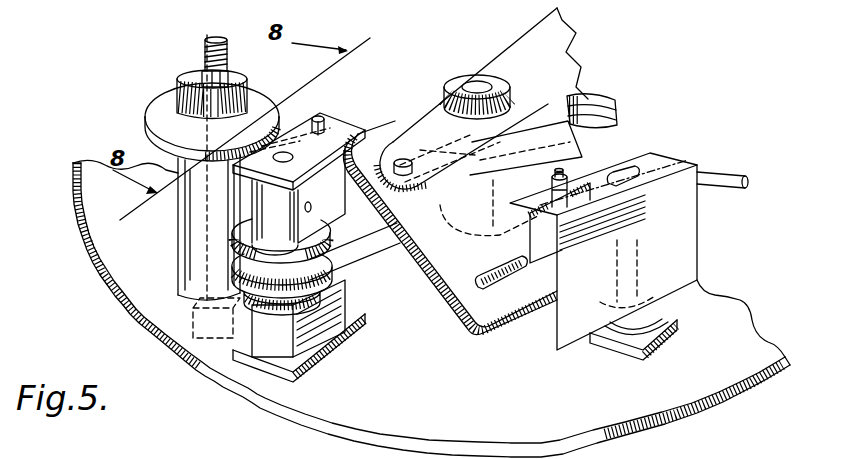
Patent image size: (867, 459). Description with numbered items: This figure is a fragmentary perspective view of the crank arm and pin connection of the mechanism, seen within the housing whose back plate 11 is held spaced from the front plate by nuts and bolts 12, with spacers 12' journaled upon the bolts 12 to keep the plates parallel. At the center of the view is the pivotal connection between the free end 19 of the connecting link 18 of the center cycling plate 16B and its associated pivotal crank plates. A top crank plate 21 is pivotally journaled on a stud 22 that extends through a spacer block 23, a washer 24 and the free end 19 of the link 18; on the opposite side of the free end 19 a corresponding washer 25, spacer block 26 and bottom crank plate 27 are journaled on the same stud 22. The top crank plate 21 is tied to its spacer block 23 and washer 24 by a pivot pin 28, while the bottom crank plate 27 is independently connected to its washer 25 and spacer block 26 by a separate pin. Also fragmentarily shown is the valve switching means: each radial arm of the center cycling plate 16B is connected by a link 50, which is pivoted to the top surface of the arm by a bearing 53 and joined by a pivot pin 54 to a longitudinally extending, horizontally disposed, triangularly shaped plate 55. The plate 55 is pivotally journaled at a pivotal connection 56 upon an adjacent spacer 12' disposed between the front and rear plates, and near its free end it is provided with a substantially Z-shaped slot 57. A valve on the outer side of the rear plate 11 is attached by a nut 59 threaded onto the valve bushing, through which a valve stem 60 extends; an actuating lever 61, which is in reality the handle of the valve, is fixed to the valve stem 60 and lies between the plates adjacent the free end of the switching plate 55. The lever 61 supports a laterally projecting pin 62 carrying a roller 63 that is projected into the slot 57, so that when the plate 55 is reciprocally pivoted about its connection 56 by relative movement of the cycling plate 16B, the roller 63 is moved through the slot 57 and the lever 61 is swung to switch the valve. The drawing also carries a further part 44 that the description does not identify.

The back plate 11 is at (714, 386).
The nuts and bolts 12 is at (218, 78).
The spacer 12' is at (190, 186).
The pivotal connection 56 is at (174, 90).
The top crank plate 21 is at (340, 126).
The stud 22 is at (285, 151).
The spacer block 23 is at (341, 200).
The pivot pin 28 is at (320, 116).
The washer 24 is at (240, 226).
The washer 25 is at (248, 305).
The free end 19 is at (282, 288).
The spacer block 26 is at (289, 341).
The bottom crank plate 27 is at (342, 337).
The connecting link 18 is at (373, 226).
The triangularly shaped plate 55 is at (453, 278).
The center cycling plate 16B is at (572, 25).
The link 50 is at (416, 120).
The pivot pin 54 is at (403, 158).
The bearing 53 is at (473, 74).
The laterally projecting pin 62 is at (583, 160).
The roller 63 is at (552, 203).
The Z-shaped slot 57 is at (555, 258).
The actuating lever 61 is at (679, 229).
The valve stem 60 is at (640, 262).
The nut 59 is at (668, 339).
The rod 44 is at (712, 184).